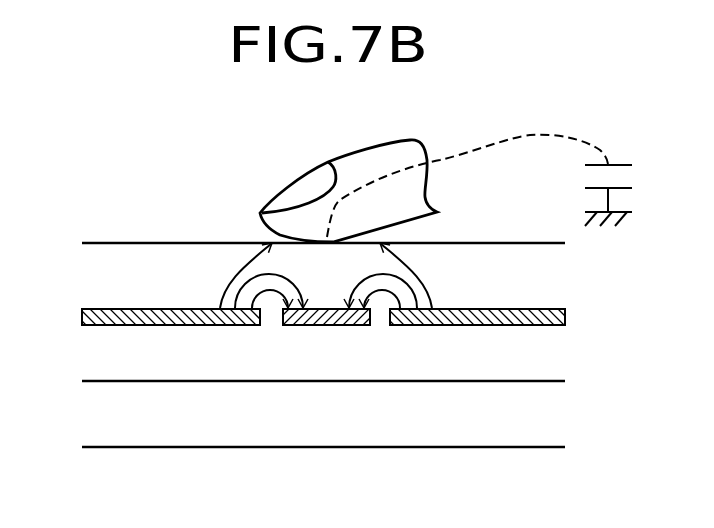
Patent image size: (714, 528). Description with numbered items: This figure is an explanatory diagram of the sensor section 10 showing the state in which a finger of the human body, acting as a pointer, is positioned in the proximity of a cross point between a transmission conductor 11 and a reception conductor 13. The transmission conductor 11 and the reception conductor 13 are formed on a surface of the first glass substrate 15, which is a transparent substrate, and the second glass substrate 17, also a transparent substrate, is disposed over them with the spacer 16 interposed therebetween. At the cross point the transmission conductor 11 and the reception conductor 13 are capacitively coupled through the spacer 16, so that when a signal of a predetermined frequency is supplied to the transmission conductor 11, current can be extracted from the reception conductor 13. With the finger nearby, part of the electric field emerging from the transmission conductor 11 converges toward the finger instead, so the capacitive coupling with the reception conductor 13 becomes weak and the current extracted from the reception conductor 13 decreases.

The sensor section 10 is at (208, 208).
The transmission conductor 11 is at (172, 308).
The reception conductor 13 is at (325, 320).
The first glass substrate 15 is at (95, 272).
The spacer 16 is at (555, 352).
The second glass substrate 17 is at (95, 416).